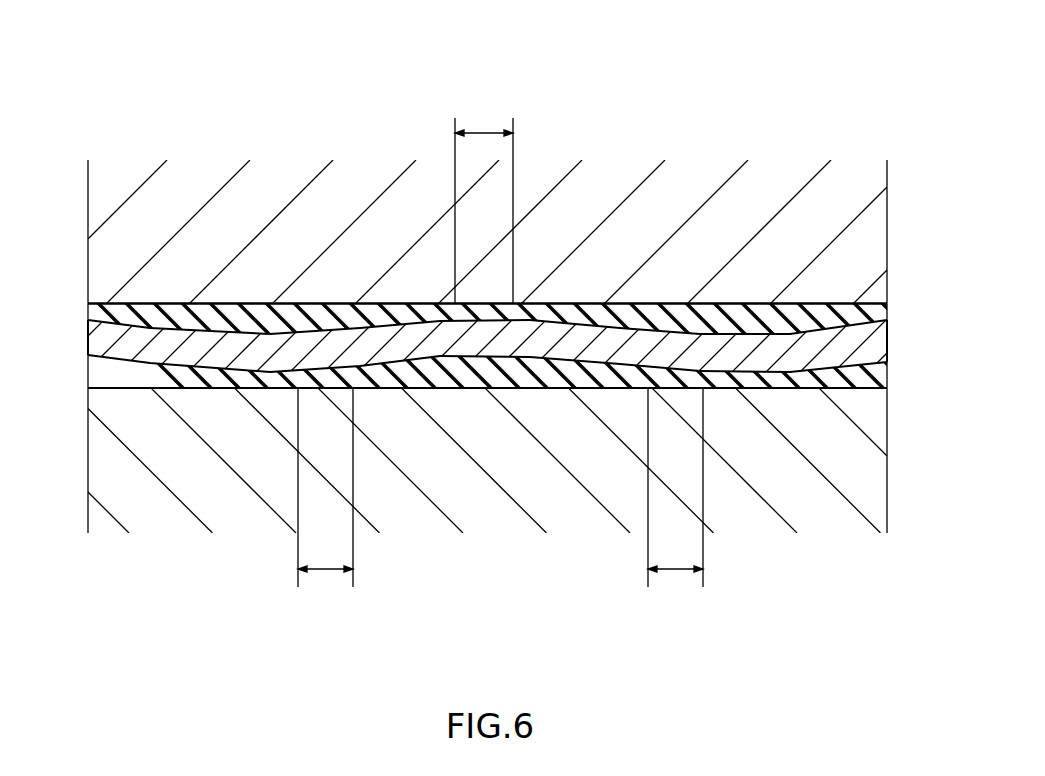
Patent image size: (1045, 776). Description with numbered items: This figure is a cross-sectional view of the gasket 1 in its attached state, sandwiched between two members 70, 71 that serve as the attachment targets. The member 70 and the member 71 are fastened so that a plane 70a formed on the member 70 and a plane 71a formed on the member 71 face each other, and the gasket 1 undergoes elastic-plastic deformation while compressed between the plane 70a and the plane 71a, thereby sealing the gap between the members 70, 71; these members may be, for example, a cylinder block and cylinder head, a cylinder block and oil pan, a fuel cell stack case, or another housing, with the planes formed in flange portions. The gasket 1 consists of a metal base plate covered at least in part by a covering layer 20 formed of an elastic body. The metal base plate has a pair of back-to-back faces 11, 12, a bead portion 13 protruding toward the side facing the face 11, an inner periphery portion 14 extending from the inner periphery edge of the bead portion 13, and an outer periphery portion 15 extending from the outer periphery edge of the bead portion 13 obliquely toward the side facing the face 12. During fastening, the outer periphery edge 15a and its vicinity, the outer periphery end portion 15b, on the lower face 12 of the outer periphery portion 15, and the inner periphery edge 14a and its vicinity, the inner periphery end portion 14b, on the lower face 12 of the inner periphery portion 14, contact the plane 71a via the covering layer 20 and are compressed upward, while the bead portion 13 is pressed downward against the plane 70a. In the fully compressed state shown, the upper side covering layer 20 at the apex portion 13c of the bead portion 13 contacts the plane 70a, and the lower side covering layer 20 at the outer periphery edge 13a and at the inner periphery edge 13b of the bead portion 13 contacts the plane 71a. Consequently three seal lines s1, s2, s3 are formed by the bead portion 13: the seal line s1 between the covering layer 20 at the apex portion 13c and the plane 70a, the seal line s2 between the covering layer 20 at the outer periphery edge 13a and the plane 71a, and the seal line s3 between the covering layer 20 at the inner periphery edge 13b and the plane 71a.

The gasket 1 is at (790, 411).
The face 11 is at (714, 328).
The face 12 is at (745, 393).
The bead portion 13 is at (547, 329).
The outer periphery edge of the bead portion 13a is at (330, 347).
The inner periphery edge of the bead portion 13b is at (675, 355).
The apex portion of the bead portion 13c is at (488, 303).
The inner periphery portion 14 is at (798, 338).
The inner periphery edge 14a is at (889, 337).
The inner periphery end portion 14b is at (880, 348).
The outer periphery portion 15 is at (216, 339).
The outer periphery edge 15a is at (87, 340).
The outer periphery end portion 15b is at (100, 345).
The covering layer 20 is at (309, 312).
The member 70 is at (791, 131).
The plane 70a is at (696, 306).
The member 71 is at (406, 519).
The plane 71a is at (528, 390).
The seal line s1 is at (487, 120).
The seal line s2 is at (330, 572).
The seal line s3 is at (675, 572).